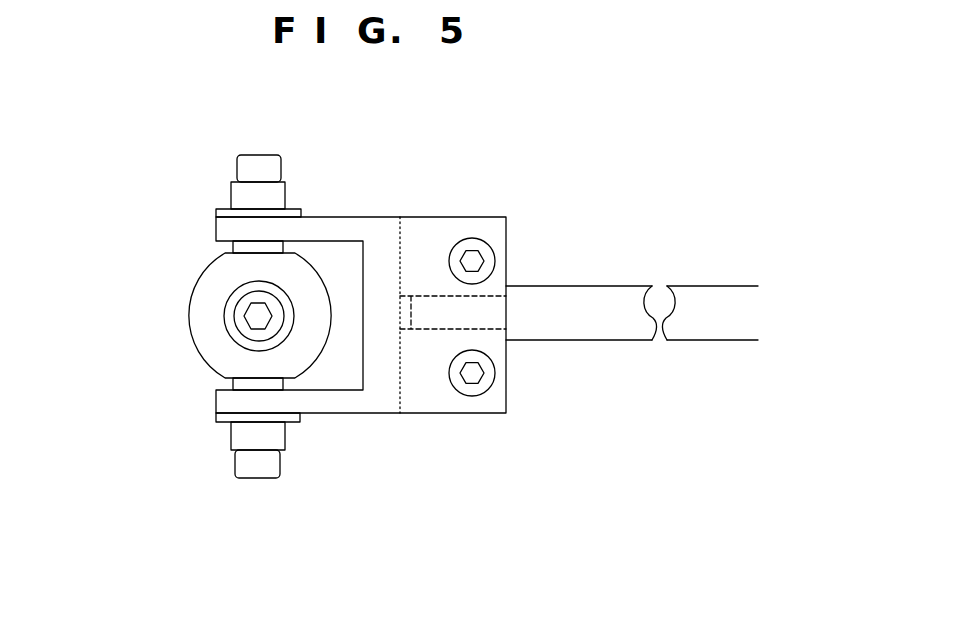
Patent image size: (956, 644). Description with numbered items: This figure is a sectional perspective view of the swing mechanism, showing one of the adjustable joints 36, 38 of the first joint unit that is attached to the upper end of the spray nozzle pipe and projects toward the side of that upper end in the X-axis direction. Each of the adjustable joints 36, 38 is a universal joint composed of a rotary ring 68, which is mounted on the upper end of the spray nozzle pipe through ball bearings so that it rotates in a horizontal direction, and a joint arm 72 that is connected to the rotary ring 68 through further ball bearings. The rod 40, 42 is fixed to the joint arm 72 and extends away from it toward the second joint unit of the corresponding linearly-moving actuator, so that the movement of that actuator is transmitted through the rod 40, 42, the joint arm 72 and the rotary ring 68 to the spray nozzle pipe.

The adjustable joint 36 is at (209, 316).
The adjustable joint 38 is at (182, 267).
The rotary ring 68 is at (207, 338).
The joint arm 72 is at (372, 402).
The rod 40 is at (632, 371).
The rod 42 is at (582, 325).